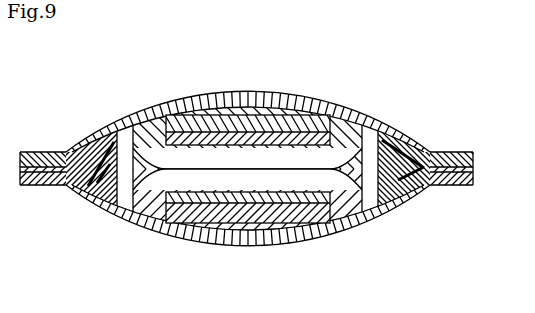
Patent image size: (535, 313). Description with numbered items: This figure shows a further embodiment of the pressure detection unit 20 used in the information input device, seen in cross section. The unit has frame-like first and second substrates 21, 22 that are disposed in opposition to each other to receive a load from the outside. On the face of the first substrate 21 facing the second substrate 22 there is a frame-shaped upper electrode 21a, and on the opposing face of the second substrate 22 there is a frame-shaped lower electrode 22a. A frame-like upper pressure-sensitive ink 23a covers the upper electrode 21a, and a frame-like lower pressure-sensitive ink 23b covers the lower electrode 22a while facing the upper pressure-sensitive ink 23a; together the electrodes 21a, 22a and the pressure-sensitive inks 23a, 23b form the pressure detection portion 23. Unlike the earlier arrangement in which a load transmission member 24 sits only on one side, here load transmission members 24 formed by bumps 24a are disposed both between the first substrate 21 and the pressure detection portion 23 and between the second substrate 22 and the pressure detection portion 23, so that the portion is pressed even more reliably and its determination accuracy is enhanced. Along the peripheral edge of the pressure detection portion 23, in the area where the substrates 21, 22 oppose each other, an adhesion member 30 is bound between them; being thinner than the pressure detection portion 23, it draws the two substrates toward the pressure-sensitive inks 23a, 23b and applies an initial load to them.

The pressure detection unit 20 is at (412, 205).
The first substrate 21 is at (186, 99).
The upper electrode 21a is at (286, 128).
The second substrate 22 is at (223, 243).
The lower electrode 22a is at (286, 200).
The pressure detection portion 23 is at (258, 174).
The upper pressure-sensitive ink 23a is at (140, 143).
The lower pressure-sensitive ink 23b is at (143, 232).
The load transmission member 24 is at (246, 172).
The bump 24a is at (231, 116).
The adhesion member 30 is at (402, 142).